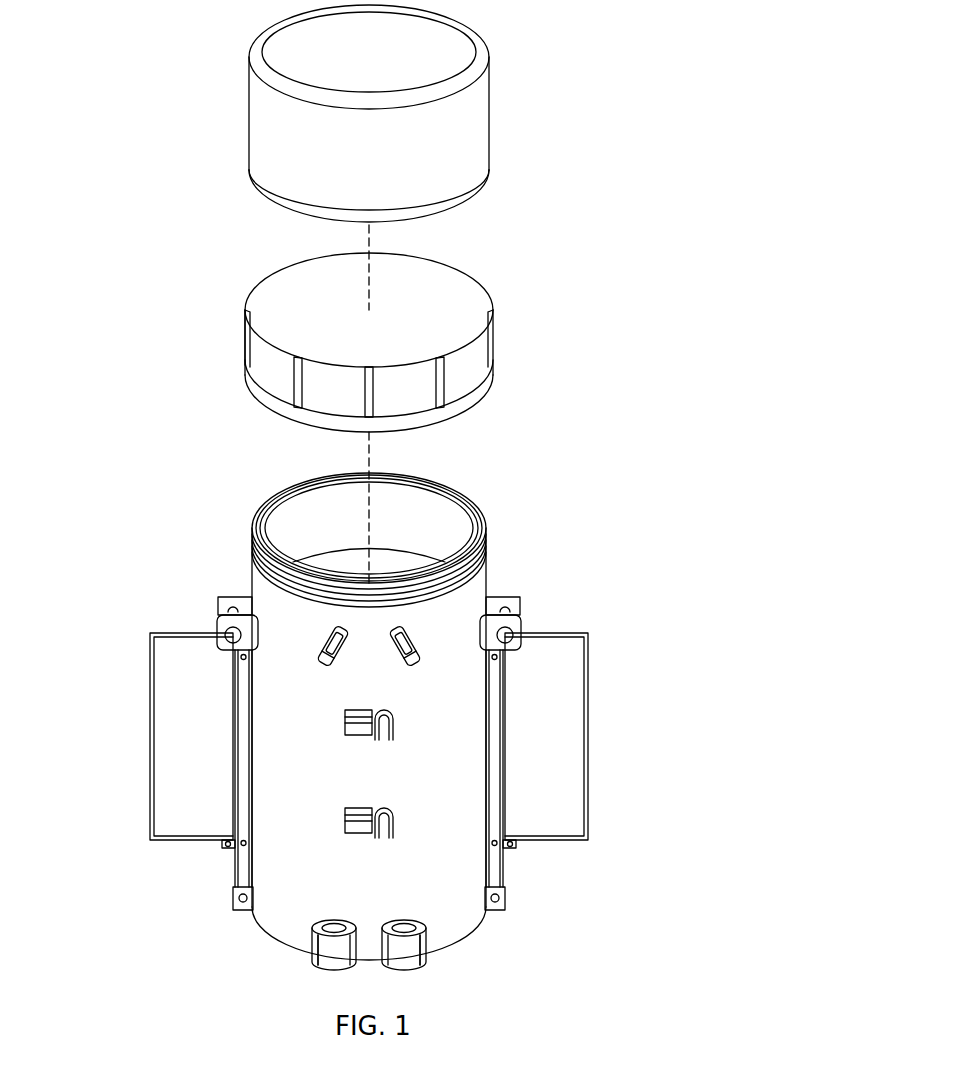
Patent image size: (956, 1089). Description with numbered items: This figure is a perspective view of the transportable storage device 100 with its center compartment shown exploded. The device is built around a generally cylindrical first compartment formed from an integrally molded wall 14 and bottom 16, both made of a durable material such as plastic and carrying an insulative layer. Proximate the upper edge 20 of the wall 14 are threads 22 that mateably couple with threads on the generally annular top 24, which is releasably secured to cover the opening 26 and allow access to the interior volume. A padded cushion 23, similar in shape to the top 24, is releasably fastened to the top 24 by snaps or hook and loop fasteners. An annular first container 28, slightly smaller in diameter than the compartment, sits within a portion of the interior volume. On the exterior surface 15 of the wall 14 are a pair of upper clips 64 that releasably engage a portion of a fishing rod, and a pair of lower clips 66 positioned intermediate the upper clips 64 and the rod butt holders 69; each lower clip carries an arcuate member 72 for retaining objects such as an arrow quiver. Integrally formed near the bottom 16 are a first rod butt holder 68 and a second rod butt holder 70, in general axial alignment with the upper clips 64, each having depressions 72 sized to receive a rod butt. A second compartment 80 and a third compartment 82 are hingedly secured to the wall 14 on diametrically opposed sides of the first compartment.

The transportable storage device 100 is at (691, 450).
The cushion 23 is at (447, 140).
The top 24 is at (473, 357).
The upper edge 20 is at (449, 478).
The first container 28 is at (400, 490).
The opening 26 is at (268, 505).
The wall 14 is at (484, 515).
The threads 22 is at (484, 547).
The exterior surface 15 is at (283, 838).
The bottom 16 is at (472, 927).
The upper clips 64 is at (325, 637).
The second compartment 80 is at (173, 733).
The third compartment 82 is at (555, 702).
The lower clips 66 is at (385, 712).
The depressions 72 is at (393, 826).
The first rod butt holder 68 is at (320, 955).
The second rod butt holder 70 is at (405, 957).
The rod butt holders 69 is at (337, 957).